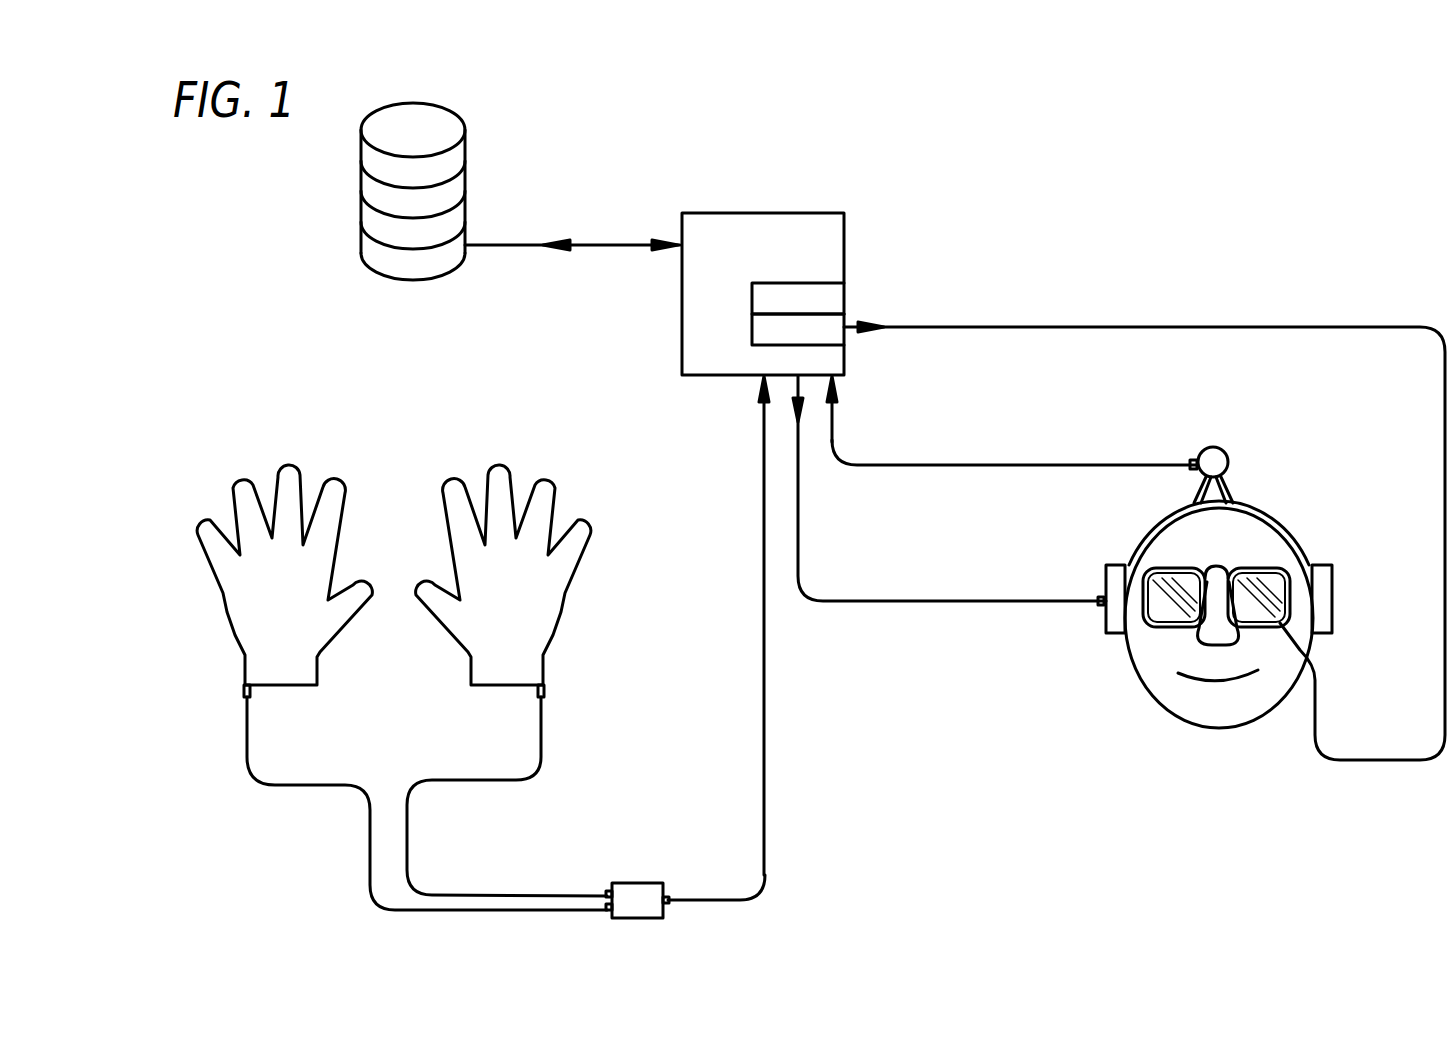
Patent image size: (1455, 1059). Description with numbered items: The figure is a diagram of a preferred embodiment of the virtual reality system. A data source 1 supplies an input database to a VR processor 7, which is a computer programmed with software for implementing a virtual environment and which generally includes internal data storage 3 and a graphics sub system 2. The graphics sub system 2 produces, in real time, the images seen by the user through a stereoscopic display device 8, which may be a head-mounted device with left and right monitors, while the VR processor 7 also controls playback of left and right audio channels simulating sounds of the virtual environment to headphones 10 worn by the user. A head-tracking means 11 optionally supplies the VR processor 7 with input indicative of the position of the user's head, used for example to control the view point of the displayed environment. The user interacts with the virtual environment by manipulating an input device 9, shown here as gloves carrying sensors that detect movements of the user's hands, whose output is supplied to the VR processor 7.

The data source 1 is at (455, 117).
The VR processor 7 is at (742, 223).
The internal data storage 3 is at (825, 298).
The graphics sub system 2 is at (828, 336).
The input device 9 is at (334, 484).
The stereoscopic display device 8 is at (1170, 627).
The headphones 10 is at (1332, 600).
The head-tracking means 11 is at (1224, 450).